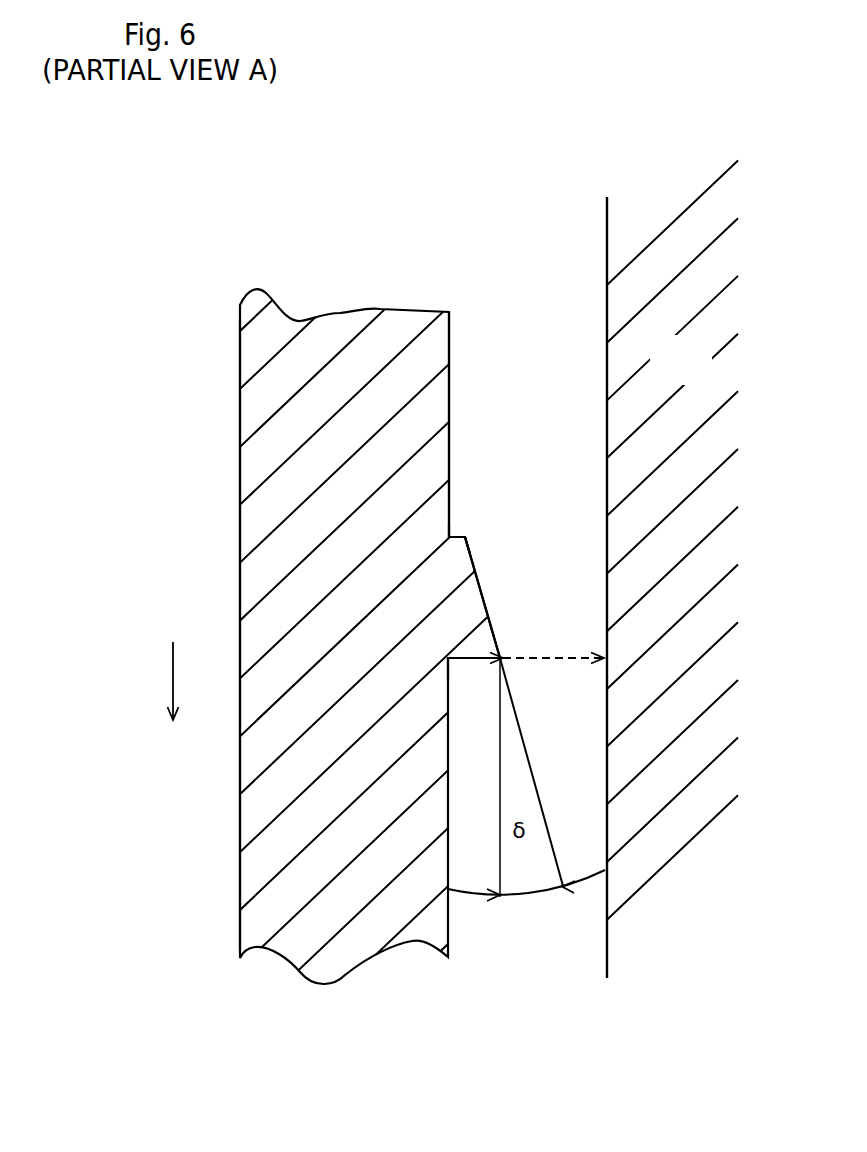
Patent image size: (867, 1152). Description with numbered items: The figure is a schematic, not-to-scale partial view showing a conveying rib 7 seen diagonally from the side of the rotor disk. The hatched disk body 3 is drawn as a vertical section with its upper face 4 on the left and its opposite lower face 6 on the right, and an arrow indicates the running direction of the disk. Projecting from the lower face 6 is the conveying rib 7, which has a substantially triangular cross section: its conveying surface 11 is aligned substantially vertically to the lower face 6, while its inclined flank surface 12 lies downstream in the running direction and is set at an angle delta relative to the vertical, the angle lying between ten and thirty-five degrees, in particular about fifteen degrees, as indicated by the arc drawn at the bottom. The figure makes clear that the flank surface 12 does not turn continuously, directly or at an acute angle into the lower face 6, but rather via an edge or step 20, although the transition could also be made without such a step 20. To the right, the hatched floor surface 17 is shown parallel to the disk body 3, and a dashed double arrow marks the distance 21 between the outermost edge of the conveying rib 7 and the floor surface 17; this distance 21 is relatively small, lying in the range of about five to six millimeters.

The disk body 3 is at (357, 557).
The upper face 4 is at (238, 489).
The lower face 6 is at (452, 445).
The conveying rib 7 is at (476, 638).
The conveying surface 11 is at (465, 664).
The inclined flank surface 12 is at (483, 591).
The floor surface 17 is at (692, 376).
The step 20 is at (454, 534).
The distance 21 is at (545, 661).